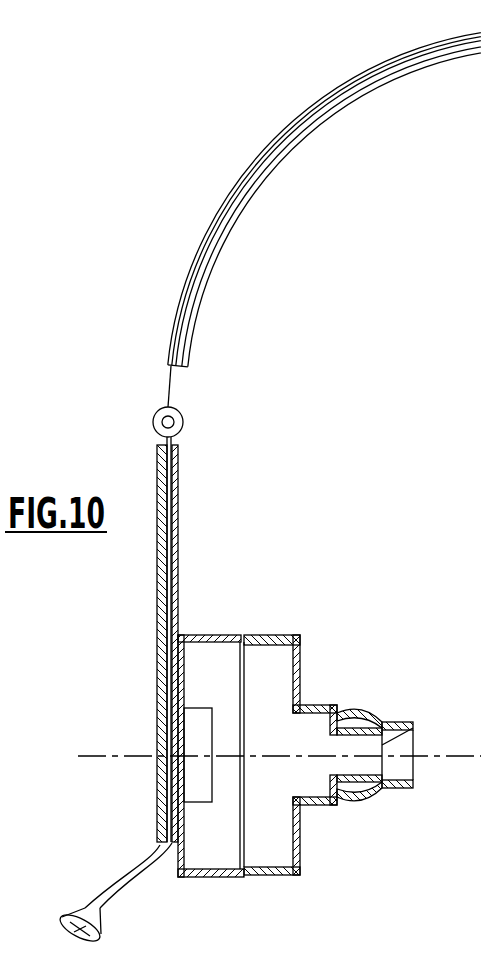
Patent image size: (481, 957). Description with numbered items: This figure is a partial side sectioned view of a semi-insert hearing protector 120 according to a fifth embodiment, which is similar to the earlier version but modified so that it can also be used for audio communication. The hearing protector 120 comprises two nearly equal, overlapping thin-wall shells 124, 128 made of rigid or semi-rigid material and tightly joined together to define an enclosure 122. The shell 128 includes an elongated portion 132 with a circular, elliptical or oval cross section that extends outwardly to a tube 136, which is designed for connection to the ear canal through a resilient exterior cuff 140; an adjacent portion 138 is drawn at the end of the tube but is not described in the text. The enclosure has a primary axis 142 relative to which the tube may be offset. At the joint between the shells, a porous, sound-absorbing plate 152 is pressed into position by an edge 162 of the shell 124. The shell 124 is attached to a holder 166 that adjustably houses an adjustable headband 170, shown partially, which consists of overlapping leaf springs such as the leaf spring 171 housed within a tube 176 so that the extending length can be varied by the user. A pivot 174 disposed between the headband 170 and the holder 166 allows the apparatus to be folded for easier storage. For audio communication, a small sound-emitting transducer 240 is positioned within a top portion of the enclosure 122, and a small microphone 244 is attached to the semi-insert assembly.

The hearing protector 120 is at (289, 763).
The enclosure 122 is at (215, 848).
The shell 124 is at (220, 878).
The shell 128 is at (302, 822).
The elongated portion 132 is at (333, 705).
The tube 136 is at (374, 722).
The tubular connector 138 is at (414, 736).
The resilient exterior cuff 140 is at (404, 790).
The primary axis 142 is at (145, 756).
The porous sound-absorbing plate 152 is at (243, 826).
The edge 162 is at (251, 635).
The holder 166 is at (180, 505).
The adjustable headband 170 is at (236, 269).
The leaf spring 171 is at (256, 160).
The pivot 174 is at (183, 420).
The tube 176 is at (328, 112).
The sound-emitting transducer 240 is at (190, 716).
The microphone 244 is at (108, 882).